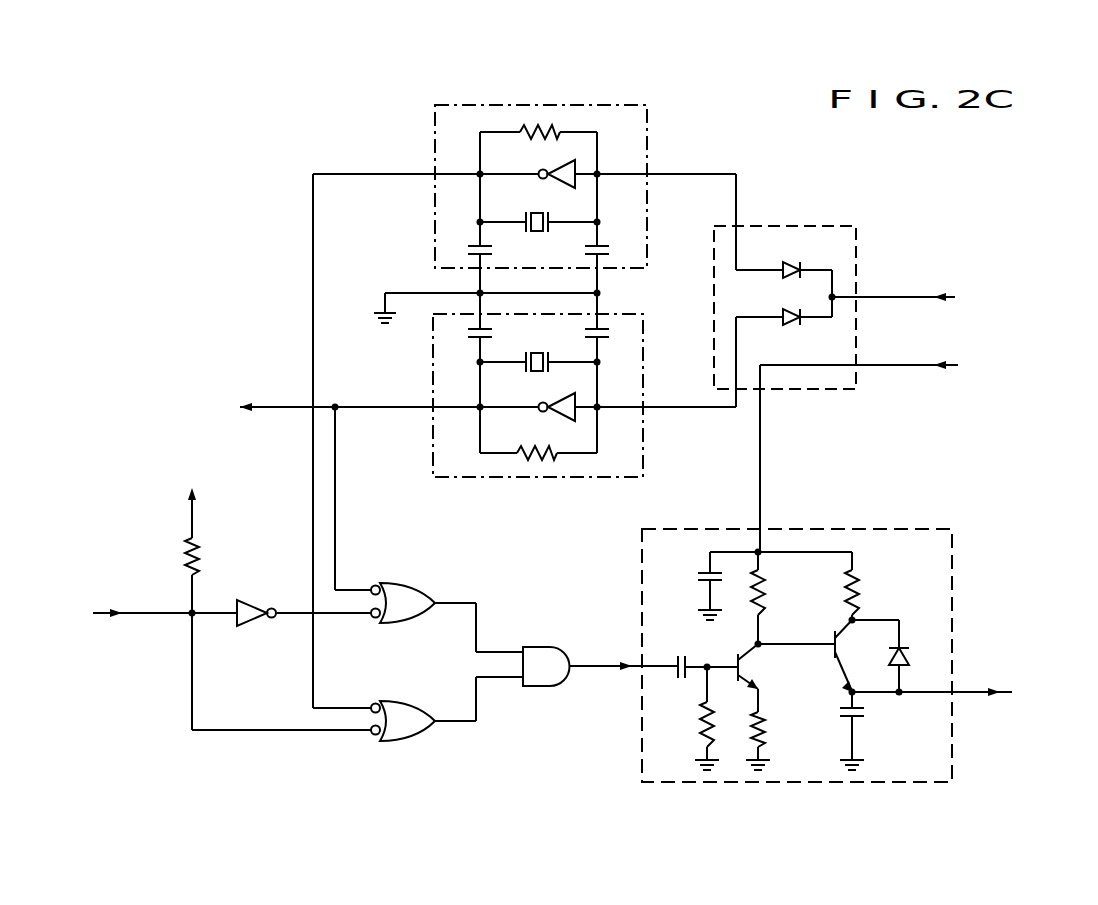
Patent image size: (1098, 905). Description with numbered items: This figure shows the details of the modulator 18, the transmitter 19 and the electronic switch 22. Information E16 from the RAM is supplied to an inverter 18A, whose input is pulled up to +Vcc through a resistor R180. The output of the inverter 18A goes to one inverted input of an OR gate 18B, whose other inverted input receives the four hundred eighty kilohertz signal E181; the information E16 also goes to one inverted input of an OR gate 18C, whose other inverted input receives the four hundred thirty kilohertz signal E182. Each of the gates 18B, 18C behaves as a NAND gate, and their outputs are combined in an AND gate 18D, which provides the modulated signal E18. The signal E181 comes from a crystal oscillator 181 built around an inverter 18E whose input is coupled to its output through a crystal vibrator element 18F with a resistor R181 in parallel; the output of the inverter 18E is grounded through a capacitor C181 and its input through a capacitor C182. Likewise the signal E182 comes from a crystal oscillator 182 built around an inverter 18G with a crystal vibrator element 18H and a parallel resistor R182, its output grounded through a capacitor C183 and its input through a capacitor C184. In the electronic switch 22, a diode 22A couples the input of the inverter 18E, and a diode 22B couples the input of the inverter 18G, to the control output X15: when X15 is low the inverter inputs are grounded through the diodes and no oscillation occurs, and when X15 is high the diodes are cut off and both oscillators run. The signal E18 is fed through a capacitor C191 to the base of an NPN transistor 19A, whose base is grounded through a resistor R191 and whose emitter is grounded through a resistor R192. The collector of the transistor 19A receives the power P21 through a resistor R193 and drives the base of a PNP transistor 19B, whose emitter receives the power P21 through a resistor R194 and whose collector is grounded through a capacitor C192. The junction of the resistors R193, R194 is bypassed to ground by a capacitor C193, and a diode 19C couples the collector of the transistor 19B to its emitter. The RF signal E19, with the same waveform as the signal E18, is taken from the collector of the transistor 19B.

The modulator 18 is at (172, 197).
The X'tal oscillator 182 is at (651, 114).
The X'tal oscillator 181 is at (577, 486).
The inverter 18A is at (241, 633).
The OR gate 18B is at (410, 597).
The OR gate 18C is at (403, 712).
The AND gate 18D is at (548, 646).
The inverter 18E is at (571, 418).
The 480 kHz crystal vibrator element 18F is at (537, 373).
The inverter 18G is at (554, 165).
The 430 kHz crystal vibrator element 18H is at (523, 221).
The resistor R180 is at (200, 556).
The resistor R181 is at (538, 442).
The resistor R182 is at (540, 120).
The capacitor C181 is at (494, 333).
The capacitor C182 is at (606, 341).
The capacitor C183 is at (504, 255).
The capacitor C184 is at (610, 250).
The electronic switch 22 is at (796, 222).
The diode 22A is at (781, 312).
The diode 22B is at (790, 268).
The transmitter 19 is at (875, 522).
The NPN transistor 19A is at (752, 672).
The PNP transistor 19B is at (851, 643).
The diode 19C is at (913, 650).
The resistor R191 is at (688, 718).
The resistor R192 is at (778, 729).
The resistor R193 is at (766, 600).
The resistor R194 is at (861, 599).
The capacitor C191 is at (681, 654).
The capacitor C192 is at (875, 731).
The capacitor C193 is at (700, 586).
The information E16 is at (140, 613).
The modulated signal E18 is at (593, 673).
The RF signal E19 is at (957, 691).
The 480 kHz signal E181 is at (360, 406).
The 430 kHz signal E182 is at (313, 262).
The control output X15 is at (913, 296).
The electric power P21 is at (920, 451).